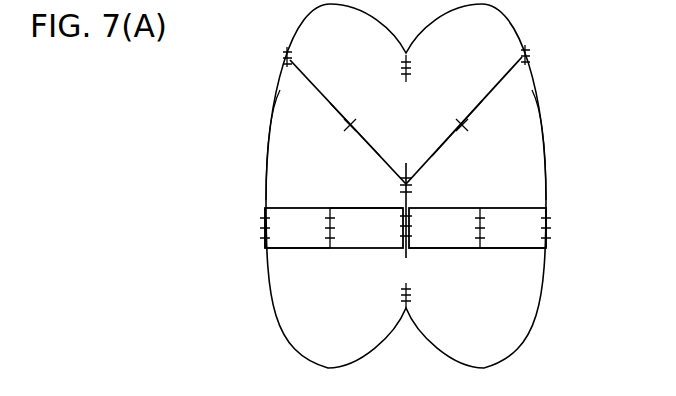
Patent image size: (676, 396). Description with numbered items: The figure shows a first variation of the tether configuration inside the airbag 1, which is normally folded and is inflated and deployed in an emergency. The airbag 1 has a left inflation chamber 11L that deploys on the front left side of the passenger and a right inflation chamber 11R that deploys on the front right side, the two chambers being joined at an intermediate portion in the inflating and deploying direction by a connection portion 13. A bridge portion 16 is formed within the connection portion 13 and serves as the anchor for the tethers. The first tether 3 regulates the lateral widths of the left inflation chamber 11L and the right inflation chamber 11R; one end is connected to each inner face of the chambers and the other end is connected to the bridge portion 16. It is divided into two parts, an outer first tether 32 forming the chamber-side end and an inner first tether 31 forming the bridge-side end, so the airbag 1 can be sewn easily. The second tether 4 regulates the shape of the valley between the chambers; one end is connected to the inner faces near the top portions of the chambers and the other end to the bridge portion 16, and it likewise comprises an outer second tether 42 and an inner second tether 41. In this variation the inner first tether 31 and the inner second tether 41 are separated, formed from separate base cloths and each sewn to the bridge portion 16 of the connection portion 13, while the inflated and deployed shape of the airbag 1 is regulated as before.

The airbag 1 is at (573, 39).
The left inflation chamber 11L is at (267, 161).
The right inflation chamber 11R is at (545, 161).
The connection portion 13 is at (413, 68).
The bridge portion 16 is at (411, 204).
The first tether 3 is at (336, 203).
The inner first tether 31 is at (371, 206).
The outer first tether 32 is at (302, 252).
The second tether 4 is at (317, 82).
The inner second tether 41 is at (374, 145).
The outer second tether 42 is at (313, 90).